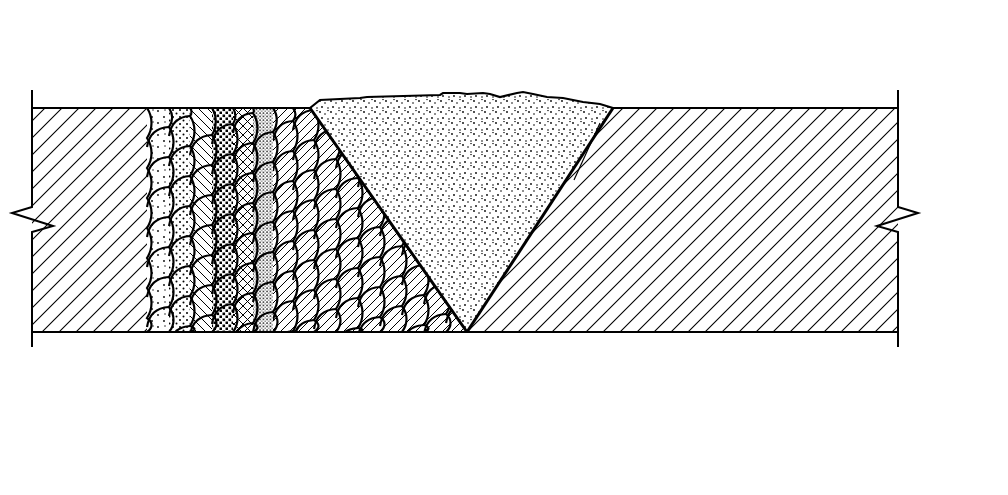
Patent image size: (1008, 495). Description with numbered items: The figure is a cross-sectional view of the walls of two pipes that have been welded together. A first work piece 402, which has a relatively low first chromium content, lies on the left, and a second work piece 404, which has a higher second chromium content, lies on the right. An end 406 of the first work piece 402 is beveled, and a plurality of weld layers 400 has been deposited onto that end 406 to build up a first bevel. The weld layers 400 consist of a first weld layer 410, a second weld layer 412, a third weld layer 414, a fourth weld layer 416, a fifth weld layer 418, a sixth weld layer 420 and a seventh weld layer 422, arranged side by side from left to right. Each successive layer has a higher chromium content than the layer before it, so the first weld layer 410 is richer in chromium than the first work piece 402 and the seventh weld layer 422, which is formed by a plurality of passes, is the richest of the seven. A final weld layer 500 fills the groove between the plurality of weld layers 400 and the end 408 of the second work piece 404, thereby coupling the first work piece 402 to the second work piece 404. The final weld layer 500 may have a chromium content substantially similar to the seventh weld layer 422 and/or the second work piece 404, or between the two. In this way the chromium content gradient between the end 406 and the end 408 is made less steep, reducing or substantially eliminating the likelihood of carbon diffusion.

The plurality of weld layers 400 is at (273, 46).
The first work piece 402 is at (78, 120).
The second work piece 404 is at (782, 120).
The end of the first work piece 406 is at (137, 128).
The end of the second work piece 408 is at (597, 132).
The first weld layer 410 is at (157, 282).
The second weld layer 412 is at (181, 312).
The third weld layer 414 is at (199, 312).
The fourth weld layer 416 is at (221, 312).
The fifth weld layer 418 is at (243, 312).
The sixth weld layer 420 is at (262, 312).
The seventh weld layer 422 is at (368, 312).
The final weld layer 500 is at (415, 110).